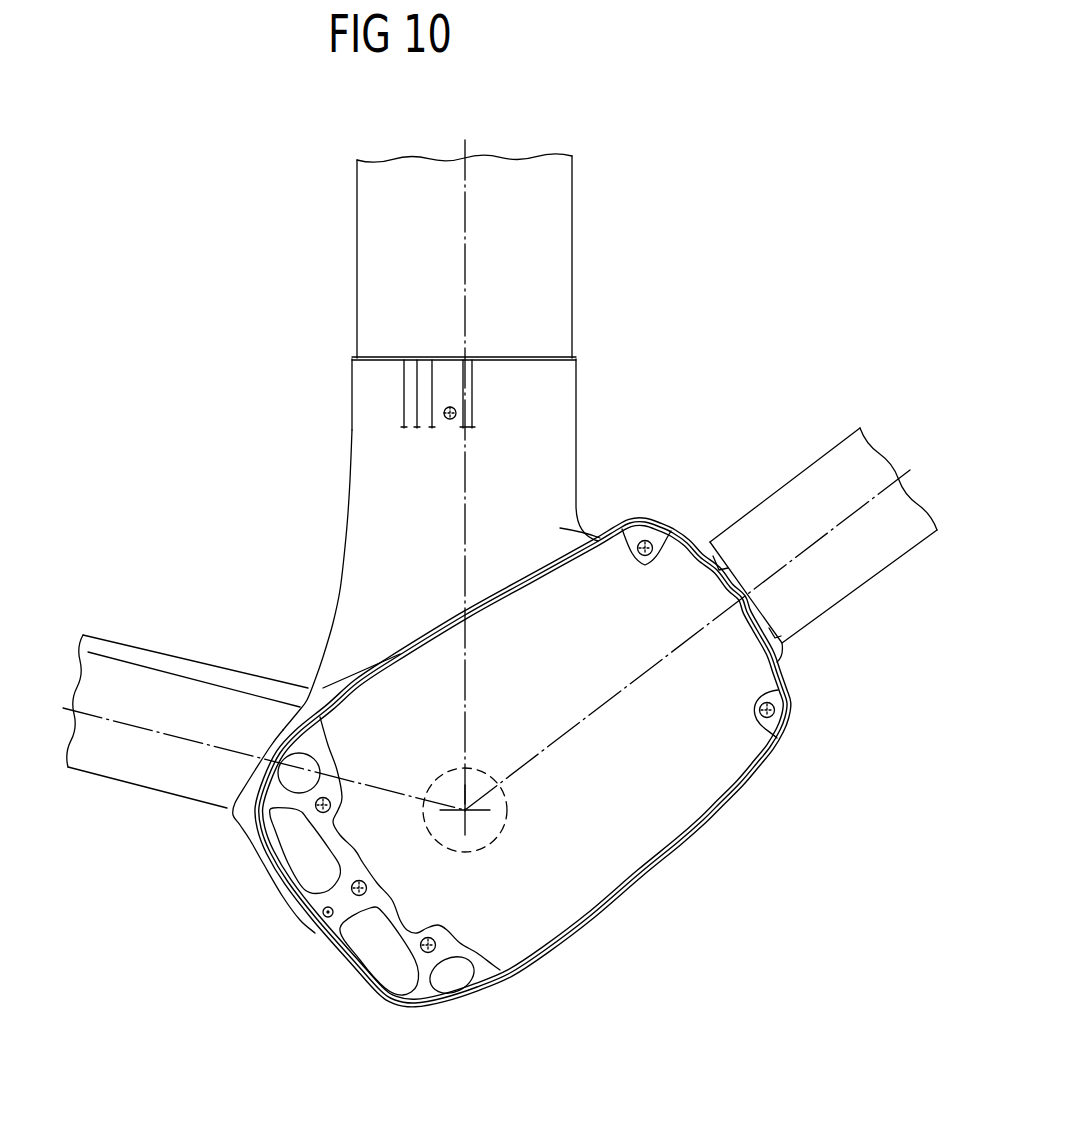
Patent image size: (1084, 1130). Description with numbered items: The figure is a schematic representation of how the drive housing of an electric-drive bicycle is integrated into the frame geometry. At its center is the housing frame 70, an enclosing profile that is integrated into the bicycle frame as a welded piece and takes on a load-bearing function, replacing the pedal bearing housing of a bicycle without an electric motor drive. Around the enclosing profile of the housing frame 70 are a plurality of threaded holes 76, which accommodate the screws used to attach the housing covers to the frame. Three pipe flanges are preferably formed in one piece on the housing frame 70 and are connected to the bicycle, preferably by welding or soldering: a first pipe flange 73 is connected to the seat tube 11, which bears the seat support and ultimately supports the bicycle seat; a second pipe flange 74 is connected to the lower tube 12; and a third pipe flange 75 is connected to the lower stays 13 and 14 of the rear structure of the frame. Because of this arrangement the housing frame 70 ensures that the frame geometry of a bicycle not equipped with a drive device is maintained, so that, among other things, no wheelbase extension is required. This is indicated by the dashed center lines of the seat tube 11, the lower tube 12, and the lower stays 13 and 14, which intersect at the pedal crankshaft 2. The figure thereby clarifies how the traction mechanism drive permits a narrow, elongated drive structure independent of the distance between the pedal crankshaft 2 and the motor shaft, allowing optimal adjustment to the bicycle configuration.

The pedal crankshaft 2 is at (495, 813).
The seat tube 11 is at (555, 230).
The lower tube 12 is at (817, 485).
The lower stay 13 is at (146, 680).
The lower stay 14 is at (203, 673).
The housing frame 70 is at (698, 822).
The first pipe flange 73 is at (555, 392).
The second pipe flange 74 is at (708, 550).
The third pipe flange 75 is at (245, 816).
The threaded holes 76 is at (646, 540).